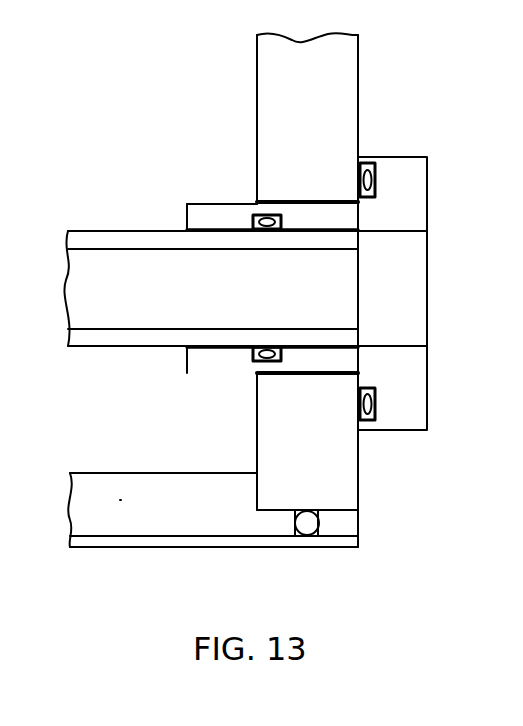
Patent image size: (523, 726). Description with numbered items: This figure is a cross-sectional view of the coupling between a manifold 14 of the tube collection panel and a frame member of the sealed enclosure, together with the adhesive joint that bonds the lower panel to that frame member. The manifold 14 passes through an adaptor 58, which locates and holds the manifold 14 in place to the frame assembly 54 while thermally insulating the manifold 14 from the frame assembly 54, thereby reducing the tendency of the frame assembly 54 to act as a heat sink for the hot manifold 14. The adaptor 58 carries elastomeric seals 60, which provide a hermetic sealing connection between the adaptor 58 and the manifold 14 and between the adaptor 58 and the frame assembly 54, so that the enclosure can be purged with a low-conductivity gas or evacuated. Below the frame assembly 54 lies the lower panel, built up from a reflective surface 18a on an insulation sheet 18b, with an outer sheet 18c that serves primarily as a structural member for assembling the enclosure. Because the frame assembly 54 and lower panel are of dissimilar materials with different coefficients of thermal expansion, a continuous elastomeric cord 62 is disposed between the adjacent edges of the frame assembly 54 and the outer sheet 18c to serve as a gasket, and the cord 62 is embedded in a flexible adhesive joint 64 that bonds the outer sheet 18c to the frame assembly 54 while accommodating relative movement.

The manifold 14 is at (117, 240).
The reflective surface 18a is at (136, 473).
The insulation sheet 18b is at (108, 497).
The outer sheet 18c is at (150, 546).
The frame assembly 54 is at (350, 80).
The adaptor 58 is at (420, 190).
The elastomeric seal 60 is at (255, 220).
The elastomeric cord 62 is at (303, 524).
The flexible adhesive joint 64 is at (348, 525).